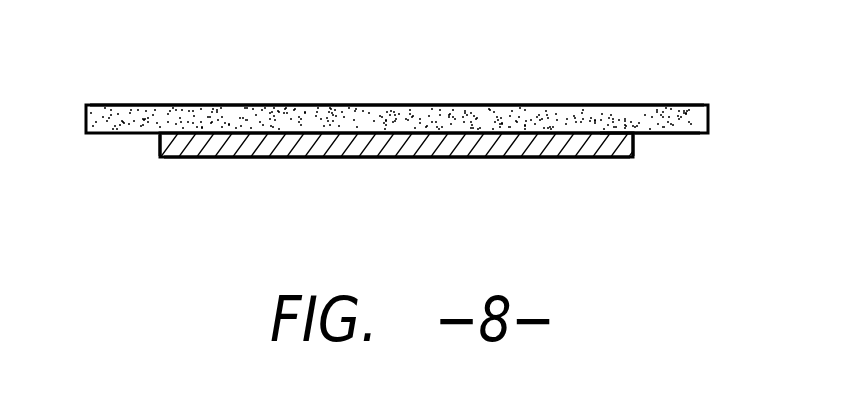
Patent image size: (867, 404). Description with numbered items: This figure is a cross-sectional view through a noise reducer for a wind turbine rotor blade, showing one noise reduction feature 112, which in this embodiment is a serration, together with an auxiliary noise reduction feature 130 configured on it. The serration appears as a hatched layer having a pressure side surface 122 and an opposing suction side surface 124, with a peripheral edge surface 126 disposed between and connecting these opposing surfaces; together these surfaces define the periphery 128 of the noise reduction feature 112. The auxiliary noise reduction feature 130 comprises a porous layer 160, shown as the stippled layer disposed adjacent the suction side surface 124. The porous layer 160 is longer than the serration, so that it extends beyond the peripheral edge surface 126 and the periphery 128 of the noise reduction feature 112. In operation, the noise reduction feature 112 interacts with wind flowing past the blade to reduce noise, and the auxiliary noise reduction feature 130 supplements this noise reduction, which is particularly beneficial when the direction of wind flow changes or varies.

The auxiliary noise reduction feature 130 is at (547, 97).
The porous layer 160 is at (450, 104).
The pressure side surface 122 is at (455, 160).
The noise reduction feature 112 is at (318, 163).
The peripheral edge surface 126 is at (160, 150).
The periphery 128 is at (641, 152).
The suction side surface 124 is at (610, 135).